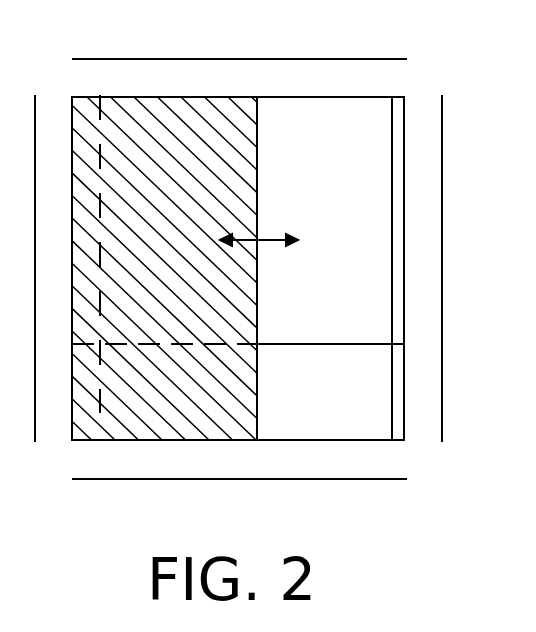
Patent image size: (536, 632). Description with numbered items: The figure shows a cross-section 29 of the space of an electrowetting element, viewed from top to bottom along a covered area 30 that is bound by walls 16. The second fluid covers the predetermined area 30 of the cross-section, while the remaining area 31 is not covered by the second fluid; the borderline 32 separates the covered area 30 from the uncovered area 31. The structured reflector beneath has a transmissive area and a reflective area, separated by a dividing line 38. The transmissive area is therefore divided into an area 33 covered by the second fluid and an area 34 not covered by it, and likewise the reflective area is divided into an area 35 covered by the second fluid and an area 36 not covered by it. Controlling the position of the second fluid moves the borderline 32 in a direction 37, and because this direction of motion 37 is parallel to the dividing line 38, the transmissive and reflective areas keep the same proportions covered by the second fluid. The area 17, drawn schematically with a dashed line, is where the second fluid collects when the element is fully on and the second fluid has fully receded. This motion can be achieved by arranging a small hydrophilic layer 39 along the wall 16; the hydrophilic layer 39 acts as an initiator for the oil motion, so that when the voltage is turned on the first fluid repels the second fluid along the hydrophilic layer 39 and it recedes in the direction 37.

The walls 16 is at (427, 168).
The area where the second fluid is collected 17 is at (82, 418).
The cross-section 29 is at (113, 97).
The predetermined area 30 is at (167, 115).
The area not covered by the second fluid 31 is at (358, 107).
The borderline 32 is at (257, 142).
The area of the transmissive area covered by the second fluid 33 is at (175, 420).
The area of the transmissive area not covered by the second fluid 34 is at (337, 427).
The area of the reflective area covered by the second fluid 35 is at (220, 107).
The area of the reflective area not covered by the second fluid 36 is at (298, 115).
The direction of motion 37 is at (268, 240).
The dividing line 38 is at (350, 344).
The hydrophilic layer 39 is at (397, 107).